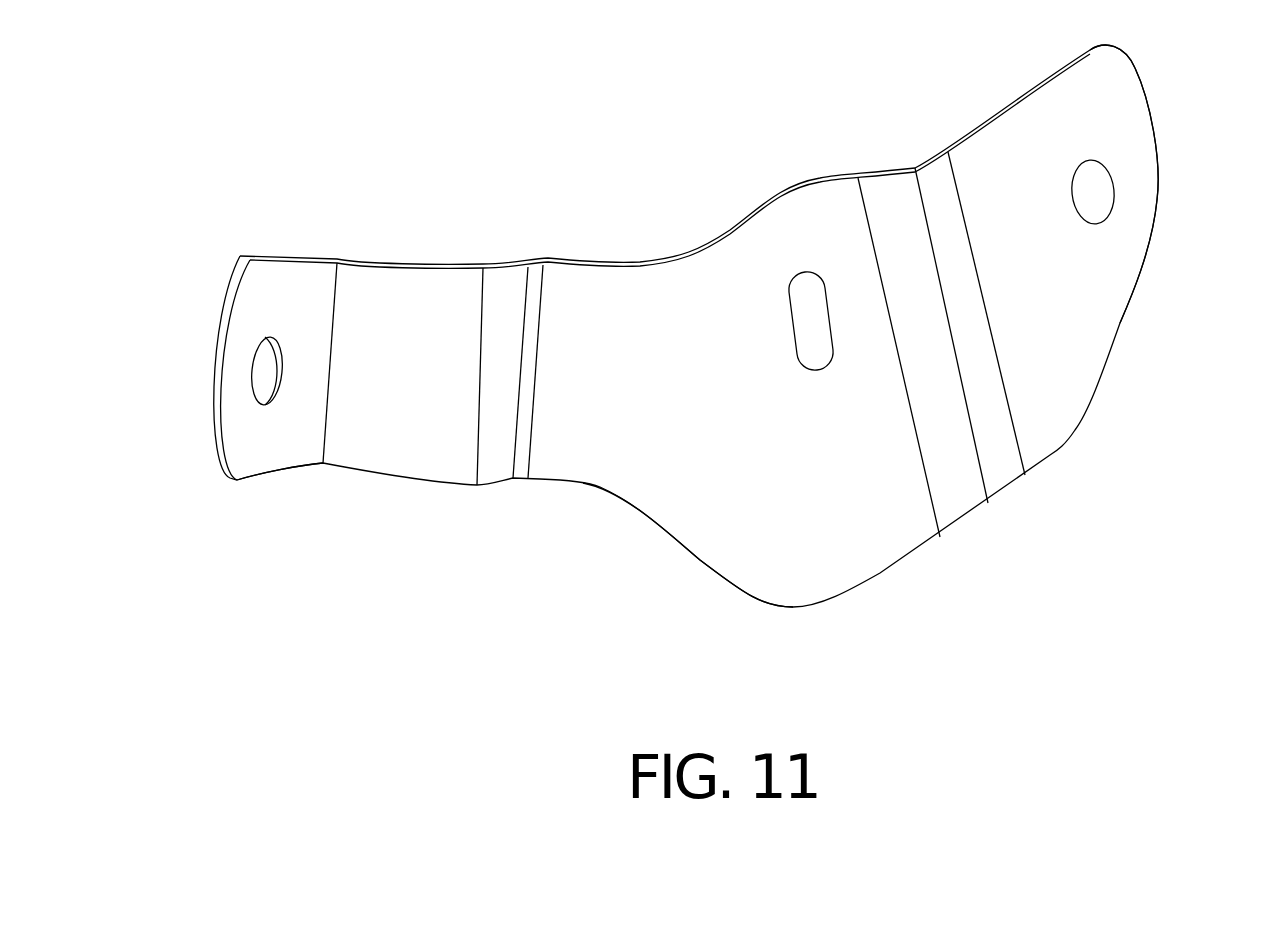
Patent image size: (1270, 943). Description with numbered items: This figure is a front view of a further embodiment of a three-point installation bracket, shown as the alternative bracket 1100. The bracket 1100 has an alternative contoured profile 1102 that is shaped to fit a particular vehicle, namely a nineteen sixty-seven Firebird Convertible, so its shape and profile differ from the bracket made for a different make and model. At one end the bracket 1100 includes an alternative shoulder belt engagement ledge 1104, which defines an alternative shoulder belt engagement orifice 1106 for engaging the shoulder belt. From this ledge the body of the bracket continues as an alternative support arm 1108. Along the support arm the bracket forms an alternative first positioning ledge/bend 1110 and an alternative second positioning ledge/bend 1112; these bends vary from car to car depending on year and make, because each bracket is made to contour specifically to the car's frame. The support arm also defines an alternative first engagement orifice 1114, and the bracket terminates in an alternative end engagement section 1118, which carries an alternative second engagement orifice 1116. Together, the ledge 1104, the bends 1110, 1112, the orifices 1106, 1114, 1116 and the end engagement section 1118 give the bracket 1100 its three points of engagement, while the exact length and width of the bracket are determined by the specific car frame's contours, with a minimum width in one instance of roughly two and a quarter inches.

The alternative bracket 1100 is at (675, 358).
The alternative contoured profile 1102 is at (273, 472).
The alternative shoulder belt engagement ledge 1104 is at (212, 400).
The alternative shoulder belt engagement orifice 1106 is at (262, 363).
The alternative support arm 1108 is at (583, 483).
The alternative first positioning ledge/bend 1110 is at (492, 473).
The alternative second positioning ledge/bend 1112 is at (970, 500).
The alternative first engagement orifice 1114 is at (807, 325).
The alternative second engagement orifice 1116 is at (1090, 197).
The alternative end engagement section 1118 is at (1102, 137).